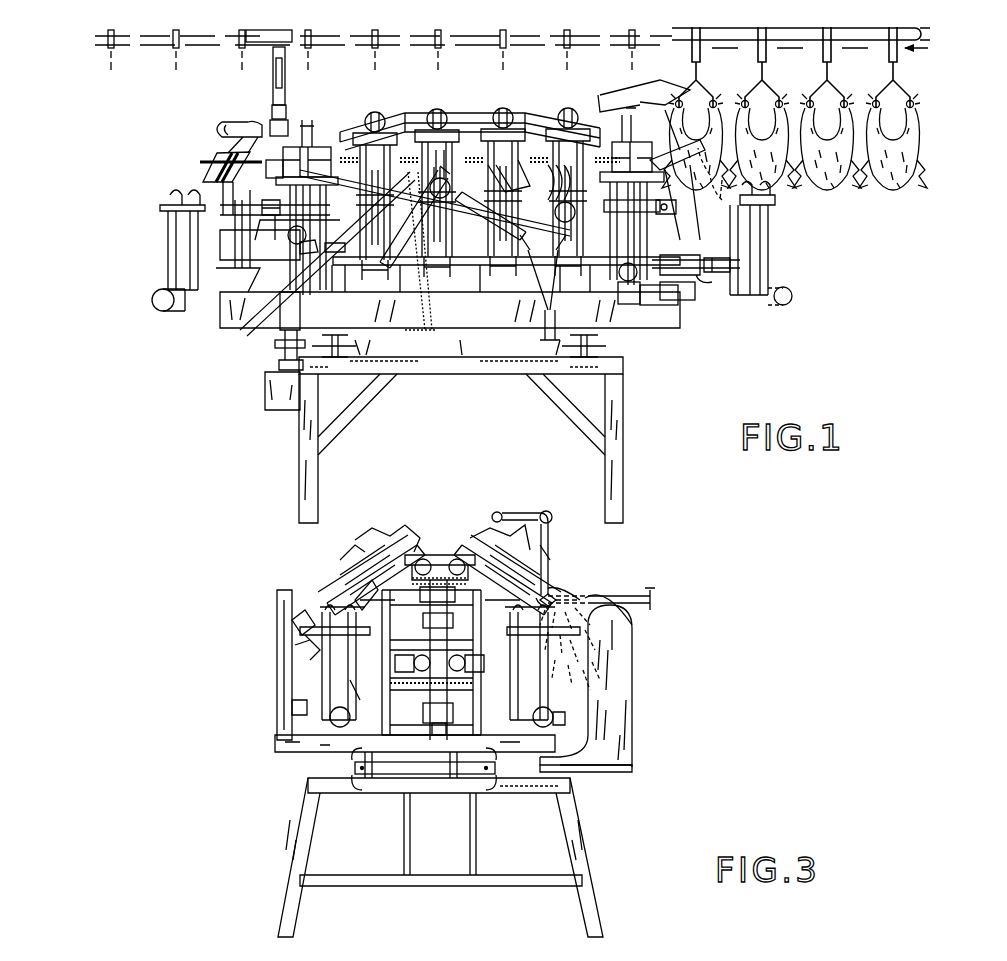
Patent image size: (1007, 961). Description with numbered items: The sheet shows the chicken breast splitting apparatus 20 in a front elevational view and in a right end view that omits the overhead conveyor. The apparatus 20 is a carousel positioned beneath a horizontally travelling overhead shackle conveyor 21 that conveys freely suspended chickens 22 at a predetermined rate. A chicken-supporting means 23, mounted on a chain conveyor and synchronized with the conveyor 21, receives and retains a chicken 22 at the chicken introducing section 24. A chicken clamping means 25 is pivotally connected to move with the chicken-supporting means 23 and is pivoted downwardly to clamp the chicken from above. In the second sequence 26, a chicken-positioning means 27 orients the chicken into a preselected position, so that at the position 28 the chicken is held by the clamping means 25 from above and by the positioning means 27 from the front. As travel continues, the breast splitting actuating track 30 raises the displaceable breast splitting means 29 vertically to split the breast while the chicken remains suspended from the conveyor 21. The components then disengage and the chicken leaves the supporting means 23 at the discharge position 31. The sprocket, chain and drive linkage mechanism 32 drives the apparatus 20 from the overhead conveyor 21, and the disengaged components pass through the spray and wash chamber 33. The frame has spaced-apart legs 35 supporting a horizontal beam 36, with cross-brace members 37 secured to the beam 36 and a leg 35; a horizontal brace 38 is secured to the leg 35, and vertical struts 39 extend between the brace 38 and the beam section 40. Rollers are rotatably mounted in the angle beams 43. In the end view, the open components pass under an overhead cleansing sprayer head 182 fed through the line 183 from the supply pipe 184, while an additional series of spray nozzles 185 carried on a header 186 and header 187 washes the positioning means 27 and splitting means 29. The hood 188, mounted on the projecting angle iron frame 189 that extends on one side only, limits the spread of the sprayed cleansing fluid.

In FIG. 1, the chicken breast splitting apparatus 20 is at (522, 114).
In FIG. 3, the chicken breast splitting apparatus 20 is at (440, 548).
In FIG. 1, the overhead shackle conveyor 21 is at (815, 33).
In FIG. 1, the chicken 22 is at (898, 188).
In FIG. 1, the chicken-supporting means 23 is at (316, 145).
In FIG. 1, the chicken introducing section 24 is at (695, 278).
In FIG. 1, the chicken clamping means 25 is at (622, 104).
In FIG. 1, the second sequence 26 is at (548, 292).
In FIG. 1, the chicken-positioning means 27 is at (766, 236).
In FIG. 1, the position 28 is at (546, 208).
In FIG. 1, the displaceable breast splitting means 29 is at (447, 178).
In FIG. 1, the breast splitting actuating track 30 is at (455, 208).
In FIG. 1, the discharge position 31 is at (296, 310).
In FIG. 1, the sprocket, chain and drive linkage mechanism 32 is at (272, 77).
In FIG. 3, the spray and wash chamber 33 is at (626, 705).
In FIG. 1, the leg 35 is at (300, 485).
In FIG. 1, the horizontal beam 36 is at (468, 375).
In FIG. 1, the cross-brace members 37 is at (340, 431).
In FIG. 3, the horizontal brace 38 is at (520, 878).
In FIG. 3, the vertical struts 39 is at (470, 835).
In FIG. 3, the beam section 40 is at (514, 788).
In FIG. 3, the angle beams 43 is at (380, 770).
In FIG. 3, the overhead cleansing sprayer head 182 is at (500, 515).
In FIG. 3, the line 183 is at (552, 540).
In FIG. 3, the supply pipe 184 is at (640, 598).
In FIG. 3, the spray nozzles 185 is at (545, 585).
In FIG. 3, the header 186 is at (552, 598).
In FIG. 3, the header 187 is at (590, 596).
In FIG. 3, the hood 188 is at (625, 666).
In FIG. 3, the projecting angle iron frame 189 is at (605, 783).